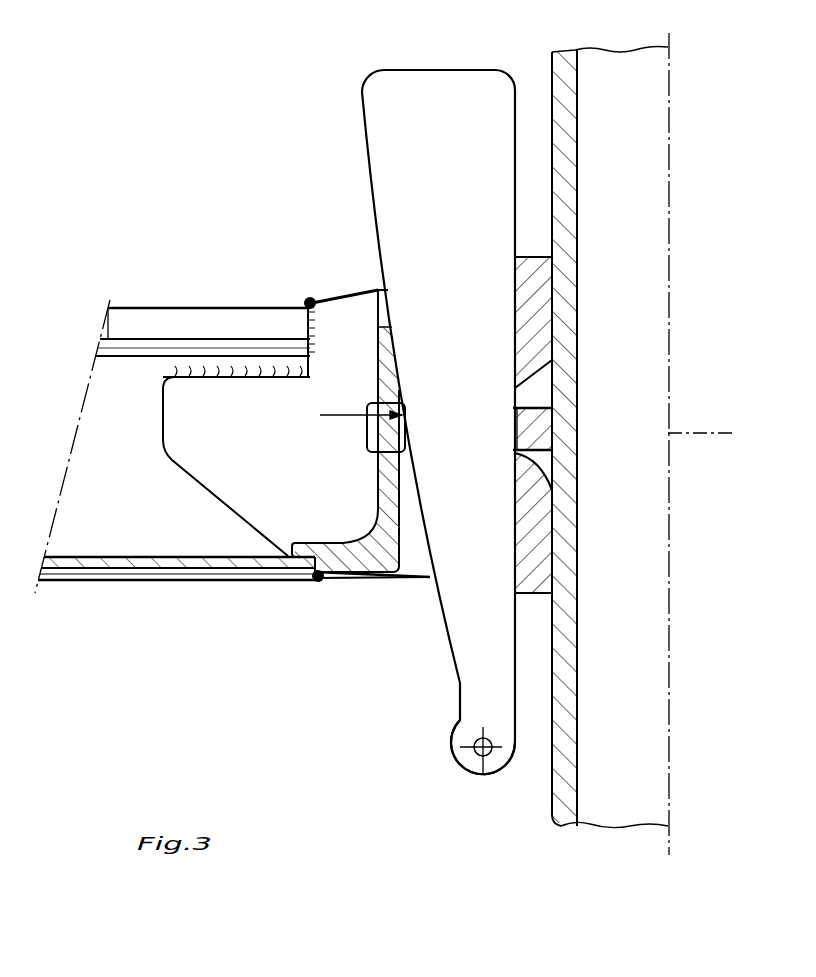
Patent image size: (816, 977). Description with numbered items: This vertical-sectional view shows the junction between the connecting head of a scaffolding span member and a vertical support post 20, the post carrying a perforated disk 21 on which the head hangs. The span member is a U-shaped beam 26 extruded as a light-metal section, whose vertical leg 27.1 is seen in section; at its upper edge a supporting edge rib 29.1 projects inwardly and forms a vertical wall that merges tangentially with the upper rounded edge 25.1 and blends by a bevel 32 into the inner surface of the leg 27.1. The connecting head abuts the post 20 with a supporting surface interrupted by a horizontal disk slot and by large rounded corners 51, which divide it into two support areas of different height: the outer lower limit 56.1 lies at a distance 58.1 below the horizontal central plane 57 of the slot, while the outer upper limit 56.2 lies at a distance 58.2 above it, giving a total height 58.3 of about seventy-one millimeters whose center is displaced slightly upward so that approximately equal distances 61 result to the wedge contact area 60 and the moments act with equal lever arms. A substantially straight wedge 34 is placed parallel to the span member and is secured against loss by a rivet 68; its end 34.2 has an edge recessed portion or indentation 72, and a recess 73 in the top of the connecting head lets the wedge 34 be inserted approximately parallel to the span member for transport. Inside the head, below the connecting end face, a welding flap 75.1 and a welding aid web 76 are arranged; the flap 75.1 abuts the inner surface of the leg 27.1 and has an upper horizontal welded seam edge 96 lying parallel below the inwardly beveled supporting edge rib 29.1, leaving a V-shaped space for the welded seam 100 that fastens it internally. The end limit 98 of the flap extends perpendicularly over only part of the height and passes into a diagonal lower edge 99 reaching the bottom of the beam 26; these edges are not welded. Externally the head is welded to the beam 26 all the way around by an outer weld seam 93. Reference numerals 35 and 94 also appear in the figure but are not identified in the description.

The vertical support post 20 is at (600, 798).
The perforated disk 21 is at (372, 453).
The upper rounded edge 25.1 is at (127, 306).
The U-shaped beam 26 is at (73, 432).
The vertical leg 27.1 is at (170, 485).
The supporting edge rib 29.1 is at (108, 332).
The bevel 32 is at (102, 350).
The wedge 34 is at (392, 107).
The end of the wedge 34.2 is at (497, 760).
The latch insert 35 is at (596, 367).
The rounded corner 51 is at (545, 480).
The outer lower limit of the supporting surface 56.1 is at (533, 595).
The outer upper limit of the supporting surface 56.2 is at (535, 253).
The horizontal central plane 57 is at (684, 430).
The distance 58.1 is at (583, 258).
The distance 58.2 is at (583, 593).
The total height of the supporting surface 58.3 is at (757, 258).
The wedge contact area 60 is at (403, 415).
The distance 61 is at (580, 292).
The rivet 68 is at (477, 755).
The edge recessed portion 72 is at (457, 695).
The recess 73 is at (382, 312).
The welding flap 75.1 is at (312, 460).
The welding aid web 76 is at (307, 550).
The outer weld seam 93 is at (318, 578).
The weld seam 94 is at (322, 580).
The upper horizontal welded seam edge 96 is at (203, 378).
The end limit 98 is at (163, 407).
The diagonal lower edge 99 is at (217, 498).
The welded seam 100 is at (230, 367).